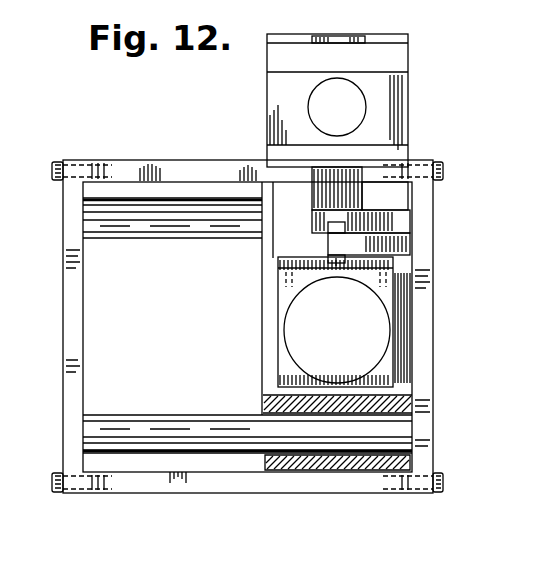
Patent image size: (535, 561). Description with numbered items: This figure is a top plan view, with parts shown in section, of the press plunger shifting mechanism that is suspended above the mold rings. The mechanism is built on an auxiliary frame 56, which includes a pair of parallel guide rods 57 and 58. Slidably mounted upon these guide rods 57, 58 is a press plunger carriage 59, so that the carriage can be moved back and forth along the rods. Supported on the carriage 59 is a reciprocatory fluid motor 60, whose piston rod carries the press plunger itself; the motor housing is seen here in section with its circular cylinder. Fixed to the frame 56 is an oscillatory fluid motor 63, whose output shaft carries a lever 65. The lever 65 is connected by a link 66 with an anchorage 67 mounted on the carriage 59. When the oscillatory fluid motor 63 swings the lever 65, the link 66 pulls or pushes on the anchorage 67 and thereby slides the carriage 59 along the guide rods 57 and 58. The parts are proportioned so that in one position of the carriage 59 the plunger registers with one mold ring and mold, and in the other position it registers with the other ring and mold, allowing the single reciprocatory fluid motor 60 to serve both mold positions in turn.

The auxiliary frame 56 is at (88, 147).
The guide rod 57 is at (176, 210).
The guide rod 58 is at (166, 418).
The press plunger carriage 59 is at (266, 250).
The reciprocatory fluid motor 60 is at (286, 345).
The oscillatory fluid motor 63 is at (409, 110).
The lever 65 is at (392, 216).
The link 66 is at (398, 243).
The anchorage 67 is at (312, 260).